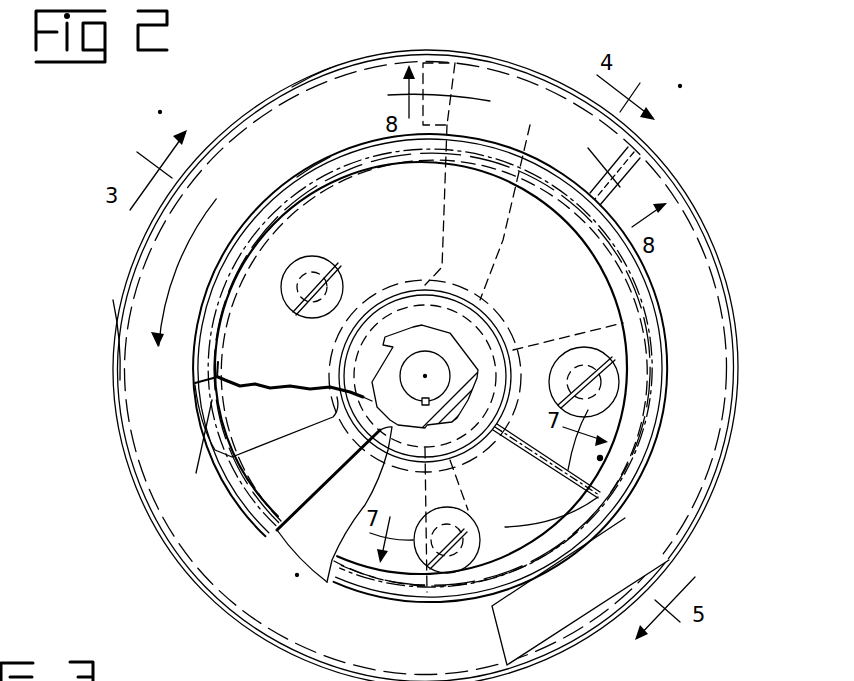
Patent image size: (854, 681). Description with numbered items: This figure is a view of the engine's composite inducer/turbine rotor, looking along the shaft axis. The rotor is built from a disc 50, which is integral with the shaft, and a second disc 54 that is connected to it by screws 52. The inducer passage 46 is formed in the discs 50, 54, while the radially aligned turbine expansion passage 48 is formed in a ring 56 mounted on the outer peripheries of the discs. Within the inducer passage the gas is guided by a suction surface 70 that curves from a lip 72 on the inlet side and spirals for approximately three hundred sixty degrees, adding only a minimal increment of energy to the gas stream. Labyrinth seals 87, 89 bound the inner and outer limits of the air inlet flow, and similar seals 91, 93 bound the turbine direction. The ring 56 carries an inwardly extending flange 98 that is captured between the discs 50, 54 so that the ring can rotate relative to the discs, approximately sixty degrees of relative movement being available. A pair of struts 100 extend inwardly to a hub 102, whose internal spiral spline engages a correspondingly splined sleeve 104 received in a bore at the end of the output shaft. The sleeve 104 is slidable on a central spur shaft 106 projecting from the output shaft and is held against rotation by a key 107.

The inducer passage 46 is at (612, 347).
The turbine expansion passage 48 is at (706, 327).
The disc 50 is at (258, 443).
The screws 52 is at (340, 262).
The second disc 54 is at (197, 413).
The ring 56 is at (120, 290).
The suction surface 70 is at (600, 458).
The lip 72 is at (600, 502).
The labyrinth seal 87 is at (340, 372).
The labyrinth seal 89 is at (217, 362).
The seal 91 is at (297, 177).
The seal 93 is at (292, 87).
The inwardly extending flange 98 is at (293, 543).
The struts 100 is at (499, 260).
The hub 102 is at (365, 440).
The splined sleeve 104 is at (447, 325).
The spur shaft 106 is at (465, 345).
The key 107 is at (428, 405).